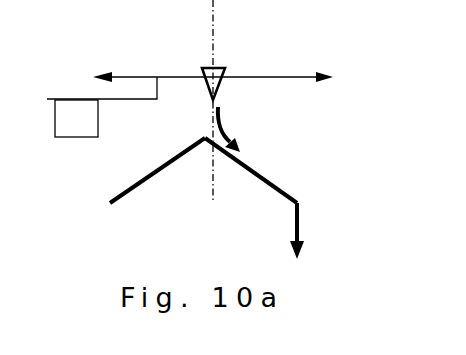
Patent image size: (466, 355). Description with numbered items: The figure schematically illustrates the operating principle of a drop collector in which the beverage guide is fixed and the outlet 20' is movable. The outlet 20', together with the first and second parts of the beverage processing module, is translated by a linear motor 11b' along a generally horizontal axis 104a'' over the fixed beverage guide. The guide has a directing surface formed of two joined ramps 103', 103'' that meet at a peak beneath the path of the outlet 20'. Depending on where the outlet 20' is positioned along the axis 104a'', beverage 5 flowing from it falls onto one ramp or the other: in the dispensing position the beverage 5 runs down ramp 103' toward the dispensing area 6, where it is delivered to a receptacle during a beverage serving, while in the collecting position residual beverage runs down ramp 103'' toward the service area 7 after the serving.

The linear motor 11b' is at (96, 75).
The outlet 20' is at (175, 54).
The generally horizontal axis 104a'' is at (236, 45).
The beverage 5 is at (223, 128).
The ramp 103'' is at (126, 170).
The ramp 103' is at (283, 170).
The service area 7 is at (106, 250).
The dispensing area 6 is at (313, 274).